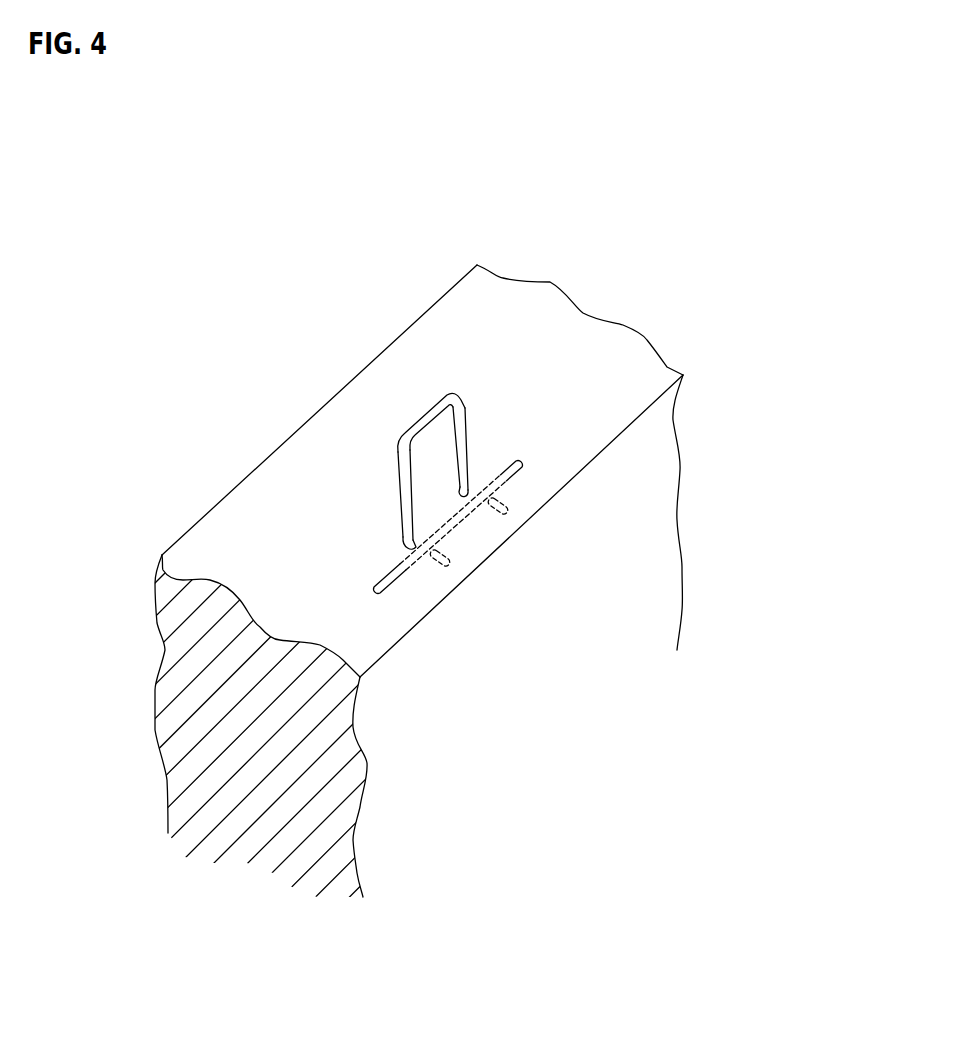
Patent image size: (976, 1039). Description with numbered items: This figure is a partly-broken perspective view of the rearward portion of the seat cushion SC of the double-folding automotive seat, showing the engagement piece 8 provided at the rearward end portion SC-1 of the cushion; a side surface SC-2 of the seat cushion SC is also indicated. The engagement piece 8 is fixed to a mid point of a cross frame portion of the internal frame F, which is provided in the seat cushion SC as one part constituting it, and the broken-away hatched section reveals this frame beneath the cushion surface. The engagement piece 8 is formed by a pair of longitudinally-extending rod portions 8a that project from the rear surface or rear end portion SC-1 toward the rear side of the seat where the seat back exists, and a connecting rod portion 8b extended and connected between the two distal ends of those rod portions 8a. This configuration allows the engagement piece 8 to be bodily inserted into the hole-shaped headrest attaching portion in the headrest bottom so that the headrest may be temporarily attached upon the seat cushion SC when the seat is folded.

The seat cushion SC is at (279, 443).
The rearward end portion of the seat cushion SC-1 is at (613, 353).
The side surface of substrate SC-2 is at (655, 493).
The engagement piece 8 is at (447, 438).
The longitudinally-extending rod portions 8a is at (400, 495).
The connecting rod portion 8b is at (427, 410).
The internal frame F is at (513, 485).